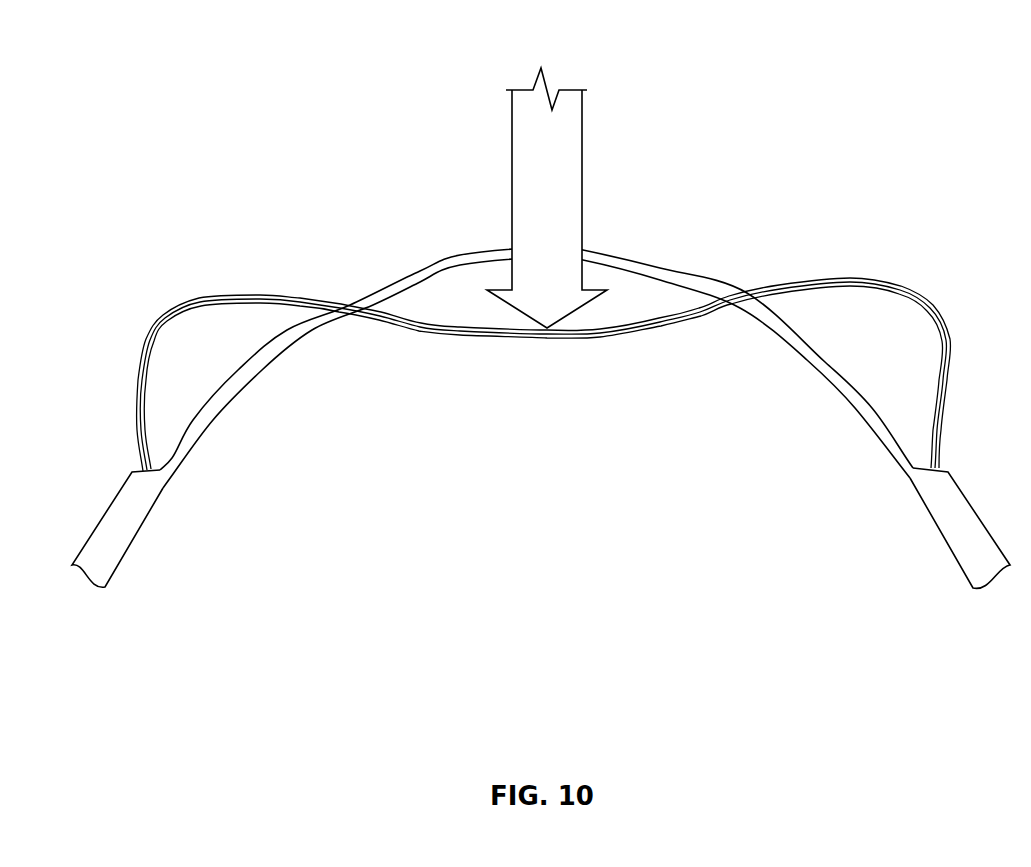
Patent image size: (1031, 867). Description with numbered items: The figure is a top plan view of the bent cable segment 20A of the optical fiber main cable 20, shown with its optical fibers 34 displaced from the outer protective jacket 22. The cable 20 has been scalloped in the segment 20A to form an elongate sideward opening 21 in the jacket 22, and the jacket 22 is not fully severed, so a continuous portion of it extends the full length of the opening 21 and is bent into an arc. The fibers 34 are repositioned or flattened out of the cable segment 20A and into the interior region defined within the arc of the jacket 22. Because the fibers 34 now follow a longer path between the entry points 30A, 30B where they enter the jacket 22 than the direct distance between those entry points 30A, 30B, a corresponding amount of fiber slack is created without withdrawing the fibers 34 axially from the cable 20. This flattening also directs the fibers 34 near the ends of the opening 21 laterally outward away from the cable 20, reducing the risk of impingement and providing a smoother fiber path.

The optical fiber main cable 20 is at (783, 182).
The cable segment 20A is at (458, 185).
The opening 21 is at (430, 240).
The outer protective jacket 22 is at (280, 350).
The entry point 30A is at (860, 485).
The entry point 30B is at (215, 486).
The optical fibers 34 is at (236, 302).